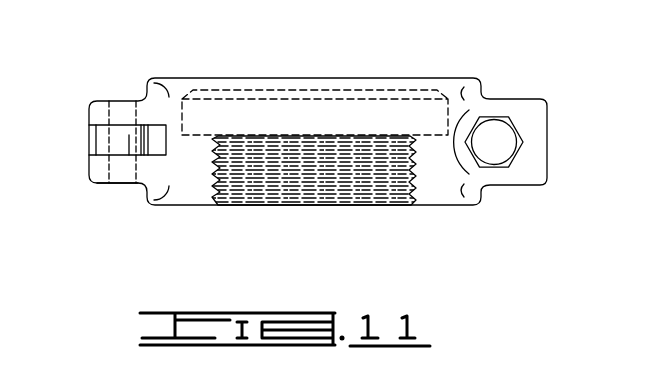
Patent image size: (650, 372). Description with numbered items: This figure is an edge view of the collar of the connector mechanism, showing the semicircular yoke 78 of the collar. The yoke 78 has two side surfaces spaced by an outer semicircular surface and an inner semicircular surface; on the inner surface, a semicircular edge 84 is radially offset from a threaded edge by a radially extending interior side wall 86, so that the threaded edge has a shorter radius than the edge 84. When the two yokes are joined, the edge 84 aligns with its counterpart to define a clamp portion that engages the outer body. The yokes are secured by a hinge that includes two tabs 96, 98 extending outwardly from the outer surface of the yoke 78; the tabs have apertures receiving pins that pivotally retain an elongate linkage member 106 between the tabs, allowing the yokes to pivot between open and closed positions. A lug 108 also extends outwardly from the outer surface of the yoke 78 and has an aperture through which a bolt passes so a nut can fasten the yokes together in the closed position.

The semicircular yoke 78 is at (452, 76).
The semicircular edge 84 is at (183, 115).
The radially extending interior side wall 86 is at (304, 133).
The tab 96 is at (97, 178).
The tab 98 is at (100, 108).
The linkage member 106 is at (101, 134).
The lug 108 is at (528, 120).